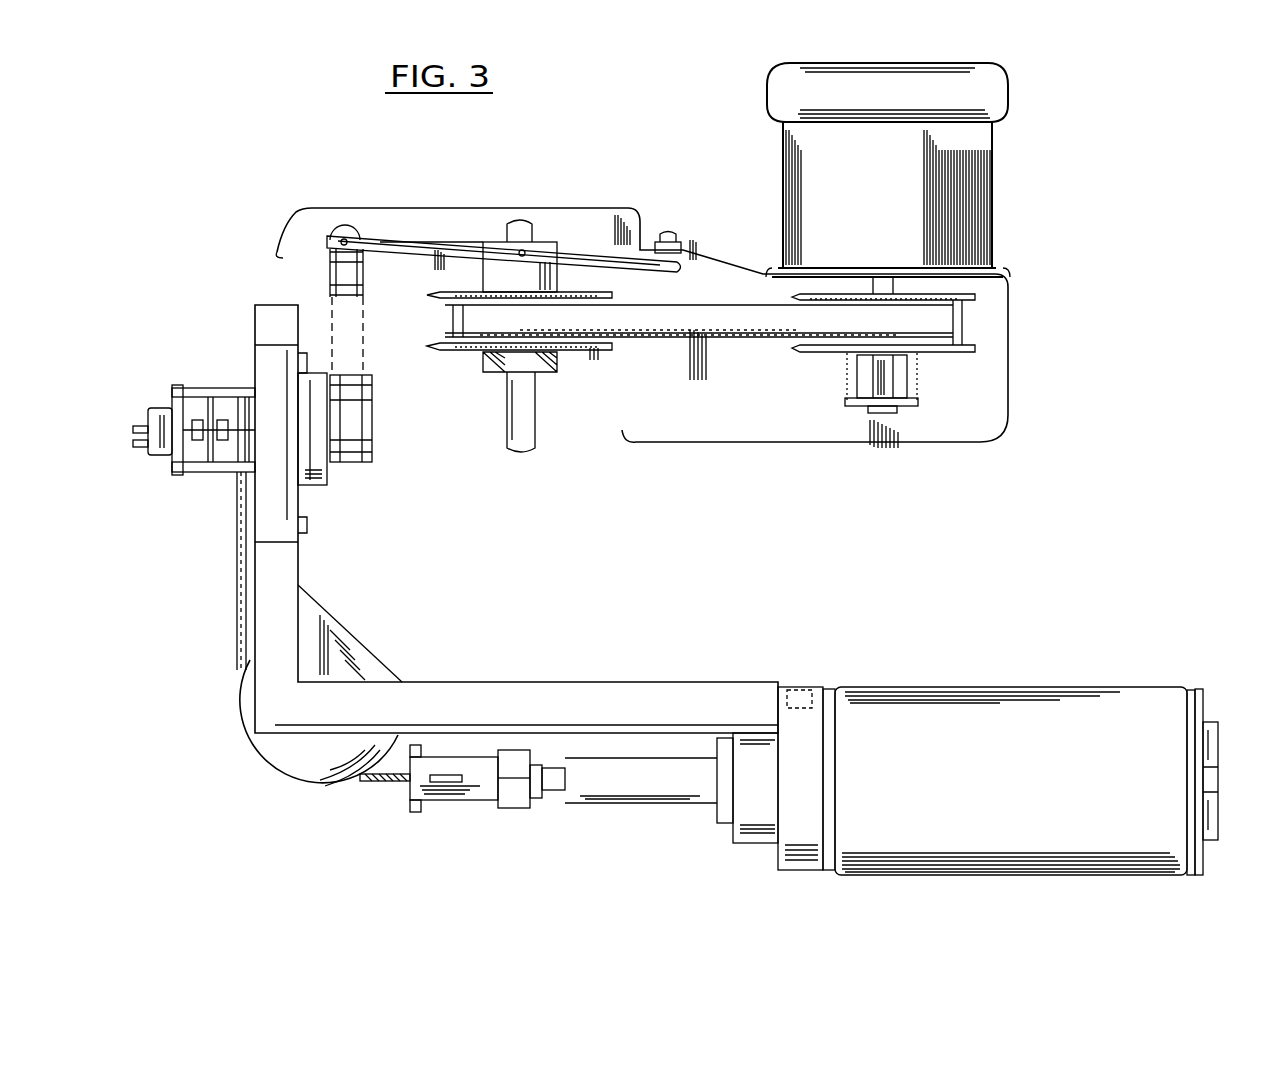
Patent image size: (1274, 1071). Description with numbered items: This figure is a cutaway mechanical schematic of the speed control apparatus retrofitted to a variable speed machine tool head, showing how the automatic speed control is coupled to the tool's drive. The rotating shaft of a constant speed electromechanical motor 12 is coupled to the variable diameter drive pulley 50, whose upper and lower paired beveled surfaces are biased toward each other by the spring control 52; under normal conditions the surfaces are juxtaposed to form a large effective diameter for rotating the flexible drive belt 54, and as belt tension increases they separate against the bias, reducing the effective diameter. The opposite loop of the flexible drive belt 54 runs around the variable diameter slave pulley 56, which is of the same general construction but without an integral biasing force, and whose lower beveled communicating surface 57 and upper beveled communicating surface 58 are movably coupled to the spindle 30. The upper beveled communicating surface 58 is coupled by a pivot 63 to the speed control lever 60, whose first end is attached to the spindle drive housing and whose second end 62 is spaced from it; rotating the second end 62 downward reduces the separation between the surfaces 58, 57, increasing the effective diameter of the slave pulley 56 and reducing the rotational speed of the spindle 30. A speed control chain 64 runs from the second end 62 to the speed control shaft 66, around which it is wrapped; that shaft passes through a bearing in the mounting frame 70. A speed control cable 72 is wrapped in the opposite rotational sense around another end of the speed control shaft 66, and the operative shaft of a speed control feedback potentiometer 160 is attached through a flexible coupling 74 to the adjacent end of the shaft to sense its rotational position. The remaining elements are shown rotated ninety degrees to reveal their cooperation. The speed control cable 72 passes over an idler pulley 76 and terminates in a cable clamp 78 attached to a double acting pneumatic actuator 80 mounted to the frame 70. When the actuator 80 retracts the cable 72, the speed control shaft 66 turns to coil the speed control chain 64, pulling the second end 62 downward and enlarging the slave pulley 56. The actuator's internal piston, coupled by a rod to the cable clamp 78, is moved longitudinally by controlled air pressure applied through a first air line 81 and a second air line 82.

The constant speed electromechanical motor 12 is at (869, 222).
The spindle 30 is at (512, 418).
The variable diameter drive pulley 50 is at (972, 338).
The spring control 52 is at (917, 392).
The flexible drive belt 54 is at (692, 325).
The variable diameter slave pulley 56 is at (578, 364).
The lower beveled communicating surface 57 is at (453, 350).
The upper beveled communicating surface 58 is at (447, 300).
The speed control lever 60 is at (433, 258).
The second end of speed control lever 62 is at (322, 225).
The pivot 63 is at (525, 250).
The speed control chain 64 is at (330, 287).
The speed control shaft 66 is at (374, 440).
The mounting frame 70 is at (289, 565).
The speed control cable 72 is at (237, 578).
The flexible coupling 74 is at (230, 475).
The idler pulley 76 is at (268, 752).
The cable clamp 78 is at (445, 790).
The double acting pneumatic actuator 80 is at (988, 786).
The first air line 81 is at (812, 674).
The second air line 82 is at (1222, 772).
The speed control feedback potentiometer 160 is at (158, 447).